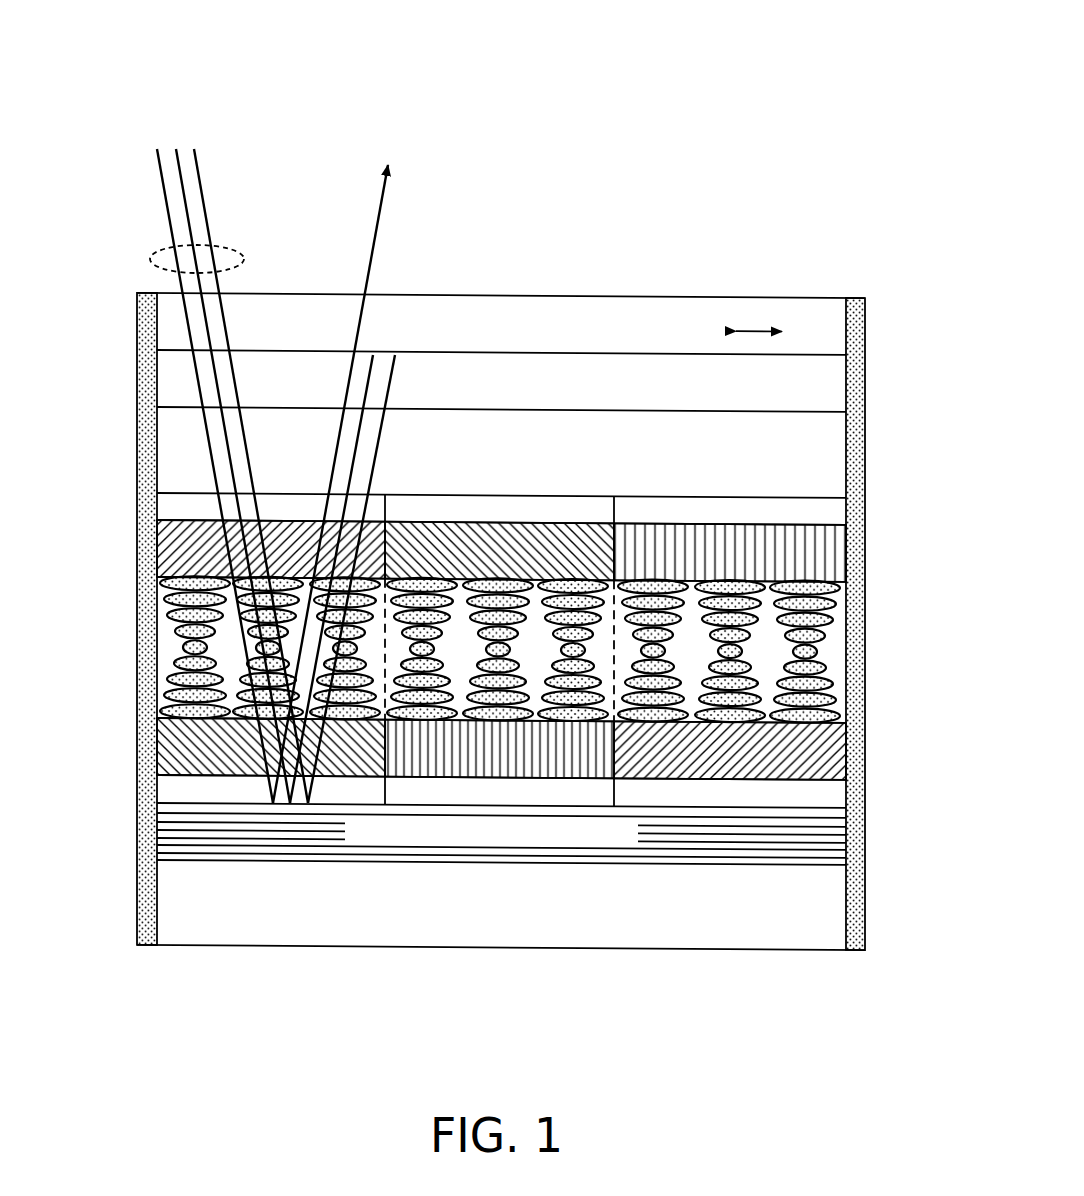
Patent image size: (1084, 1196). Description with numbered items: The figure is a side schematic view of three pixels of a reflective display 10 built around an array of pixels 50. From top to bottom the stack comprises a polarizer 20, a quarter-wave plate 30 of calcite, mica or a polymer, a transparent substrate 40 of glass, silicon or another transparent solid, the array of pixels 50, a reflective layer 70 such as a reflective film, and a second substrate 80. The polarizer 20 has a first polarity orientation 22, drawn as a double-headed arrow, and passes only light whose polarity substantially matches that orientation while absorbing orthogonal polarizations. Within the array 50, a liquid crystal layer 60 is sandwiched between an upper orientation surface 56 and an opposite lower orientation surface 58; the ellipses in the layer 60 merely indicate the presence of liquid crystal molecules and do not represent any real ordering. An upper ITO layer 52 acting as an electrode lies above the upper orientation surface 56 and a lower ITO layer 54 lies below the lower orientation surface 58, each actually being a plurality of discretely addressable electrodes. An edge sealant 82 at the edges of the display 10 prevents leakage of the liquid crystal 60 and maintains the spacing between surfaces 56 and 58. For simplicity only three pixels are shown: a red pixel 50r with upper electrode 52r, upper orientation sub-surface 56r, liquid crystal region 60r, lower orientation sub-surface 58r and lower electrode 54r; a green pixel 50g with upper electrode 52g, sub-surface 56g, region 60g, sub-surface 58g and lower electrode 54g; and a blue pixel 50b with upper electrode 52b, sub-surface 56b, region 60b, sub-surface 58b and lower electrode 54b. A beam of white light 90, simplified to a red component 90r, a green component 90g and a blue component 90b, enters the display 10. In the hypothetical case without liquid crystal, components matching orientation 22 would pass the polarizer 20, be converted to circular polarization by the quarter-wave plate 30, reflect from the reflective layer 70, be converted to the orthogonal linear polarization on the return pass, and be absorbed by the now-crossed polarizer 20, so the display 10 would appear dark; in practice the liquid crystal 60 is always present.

The display 10 is at (518, 501).
The polarizer 20 is at (840, 330).
The first polarity orientation 22 is at (762, 325).
The quarter-wave plate 30 is at (840, 387).
The transparent substrate 40 is at (840, 443).
The array of pixels 50 is at (518, 533).
The red pixel 50r is at (191, 484).
The green pixel 50g is at (576, 486).
The blue pixel 50b is at (772, 523).
The upper ITO layer 52 is at (465, 508).
The upper electrode 52r is at (308, 517).
The upper electrode 52g is at (519, 517).
The upper electrode 52b is at (731, 519).
The lower ITO layer 54 is at (465, 791).
The lower electrode 54r is at (217, 802).
The lower electrode 54g is at (519, 803).
The lower electrode 54b is at (761, 804).
The upper orientation surface 56 is at (517, 561).
The upper orientation sub-surface 56r is at (163, 566).
The upper orientation sub-surface 56g is at (519, 563).
The upper orientation sub-surface 56b is at (835, 570).
The lower orientation surface 58 is at (518, 749).
The lower orientation sub-surface 58r is at (170, 752).
The lower orientation sub-surface 58g is at (519, 757).
The lower orientation sub-surface 58b is at (835, 763).
The liquid crystal layer 60 is at (517, 649).
The liquid crystal region 60r is at (163, 657).
The liquid crystal region 60g is at (521, 659).
The liquid crystal region 60b is at (833, 658).
The reflective layer 70 is at (840, 838).
The second substrate 80 is at (840, 912).
The edge sealant 82 is at (145, 892).
The beam of white light 90 is at (279, 464).
The red component 90r is at (162, 195).
The green component 90g is at (186, 198).
The blue component 90b is at (212, 227).